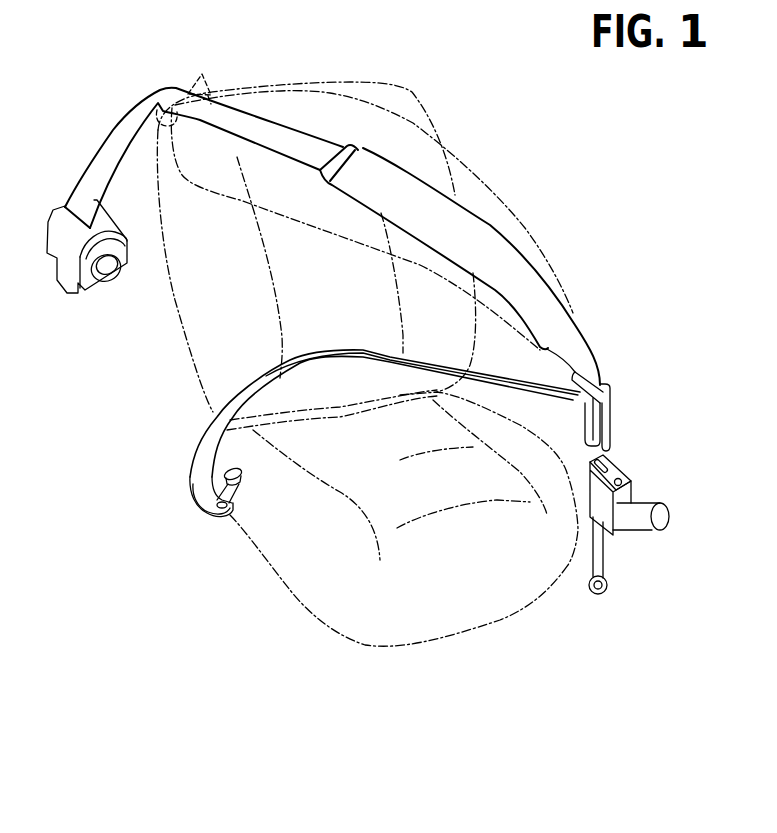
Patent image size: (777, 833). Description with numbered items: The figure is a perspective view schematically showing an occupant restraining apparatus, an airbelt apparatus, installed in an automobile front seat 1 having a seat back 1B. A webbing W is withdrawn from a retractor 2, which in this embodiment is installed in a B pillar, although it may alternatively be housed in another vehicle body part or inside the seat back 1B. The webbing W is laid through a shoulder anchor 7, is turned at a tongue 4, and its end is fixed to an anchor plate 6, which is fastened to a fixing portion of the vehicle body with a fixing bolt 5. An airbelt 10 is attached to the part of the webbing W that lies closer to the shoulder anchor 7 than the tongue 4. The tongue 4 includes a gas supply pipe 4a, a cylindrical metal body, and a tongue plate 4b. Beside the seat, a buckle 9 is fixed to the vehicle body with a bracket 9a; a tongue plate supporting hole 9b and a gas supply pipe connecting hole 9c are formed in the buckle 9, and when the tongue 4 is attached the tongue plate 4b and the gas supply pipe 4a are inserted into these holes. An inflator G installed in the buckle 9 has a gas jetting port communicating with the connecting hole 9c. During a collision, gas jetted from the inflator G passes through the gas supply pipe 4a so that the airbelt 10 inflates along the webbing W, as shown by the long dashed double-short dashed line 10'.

The automobile front seat 1 is at (338, 590).
The seat back 1B is at (405, 90).
The retractor 2 is at (100, 296).
The tongue 4 is at (620, 414).
The gas supply pipe 4a is at (612, 441).
The tongue plate 4b is at (590, 427).
The fixing bolt 5 is at (235, 511).
The anchor plate 6 is at (197, 507).
The shoulder anchor 7 is at (203, 78).
The buckle 9 is at (654, 533).
The bracket 9a is at (608, 547).
The tongue plate supporting hole 9b is at (613, 459).
The gas supply pipe connecting hole 9c is at (628, 479).
The airbelt 10 is at (462, 266).
The inflated airbelt 10' is at (380, 202).
The inflator G is at (667, 520).
The webbing W is at (110, 128).